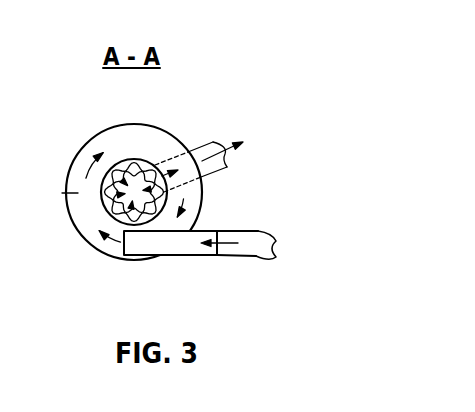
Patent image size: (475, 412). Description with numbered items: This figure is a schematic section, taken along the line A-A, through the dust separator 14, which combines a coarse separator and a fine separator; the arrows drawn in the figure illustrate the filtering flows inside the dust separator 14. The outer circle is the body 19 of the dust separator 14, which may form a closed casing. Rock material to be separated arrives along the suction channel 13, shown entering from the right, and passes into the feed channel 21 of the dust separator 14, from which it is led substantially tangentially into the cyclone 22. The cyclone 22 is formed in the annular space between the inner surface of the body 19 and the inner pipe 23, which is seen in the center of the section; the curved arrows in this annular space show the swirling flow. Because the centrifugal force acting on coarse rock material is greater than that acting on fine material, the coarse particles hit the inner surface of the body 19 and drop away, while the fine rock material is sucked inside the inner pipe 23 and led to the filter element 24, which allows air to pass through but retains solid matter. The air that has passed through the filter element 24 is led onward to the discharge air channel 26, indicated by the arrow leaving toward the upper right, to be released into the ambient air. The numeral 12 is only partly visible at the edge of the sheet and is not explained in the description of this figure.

The component (partially shown) 12 is at (6, 204).
The suction channel 13 is at (261, 250).
The dust separator 14 is at (78, 100).
The body 19 is at (75, 157).
The feed channel 21 is at (170, 247).
The cyclone 22 is at (72, 192).
The inner pipe 23 is at (112, 192).
The filter element 24 is at (136, 162).
The discharge air channel 26 is at (202, 146).